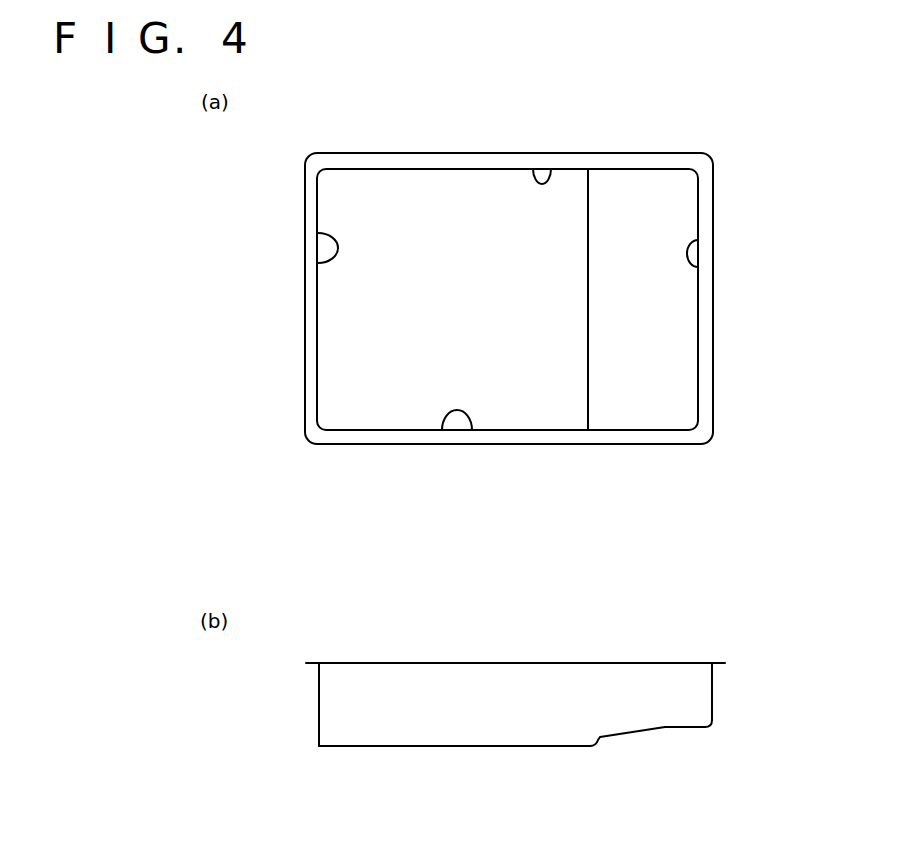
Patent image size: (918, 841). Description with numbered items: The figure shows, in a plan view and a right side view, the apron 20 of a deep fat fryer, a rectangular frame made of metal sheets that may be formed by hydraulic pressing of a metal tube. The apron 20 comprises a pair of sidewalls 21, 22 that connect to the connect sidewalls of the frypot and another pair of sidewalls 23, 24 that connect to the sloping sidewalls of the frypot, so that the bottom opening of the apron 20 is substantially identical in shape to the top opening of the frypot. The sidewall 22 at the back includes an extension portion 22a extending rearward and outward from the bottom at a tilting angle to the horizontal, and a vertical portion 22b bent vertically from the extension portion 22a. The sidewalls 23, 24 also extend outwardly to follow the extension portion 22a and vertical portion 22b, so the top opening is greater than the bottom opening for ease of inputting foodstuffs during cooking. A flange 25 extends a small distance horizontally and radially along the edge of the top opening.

The apron 20 is at (713, 156).
The sidewall 21 is at (318, 234).
The sidewall 22 is at (689, 264).
The extension portion 22a is at (648, 403).
The vertical portion 22b is at (713, 705).
The sidewall 23 is at (551, 178).
The sidewall 24 is at (472, 430).
The flange 25 is at (618, 153).